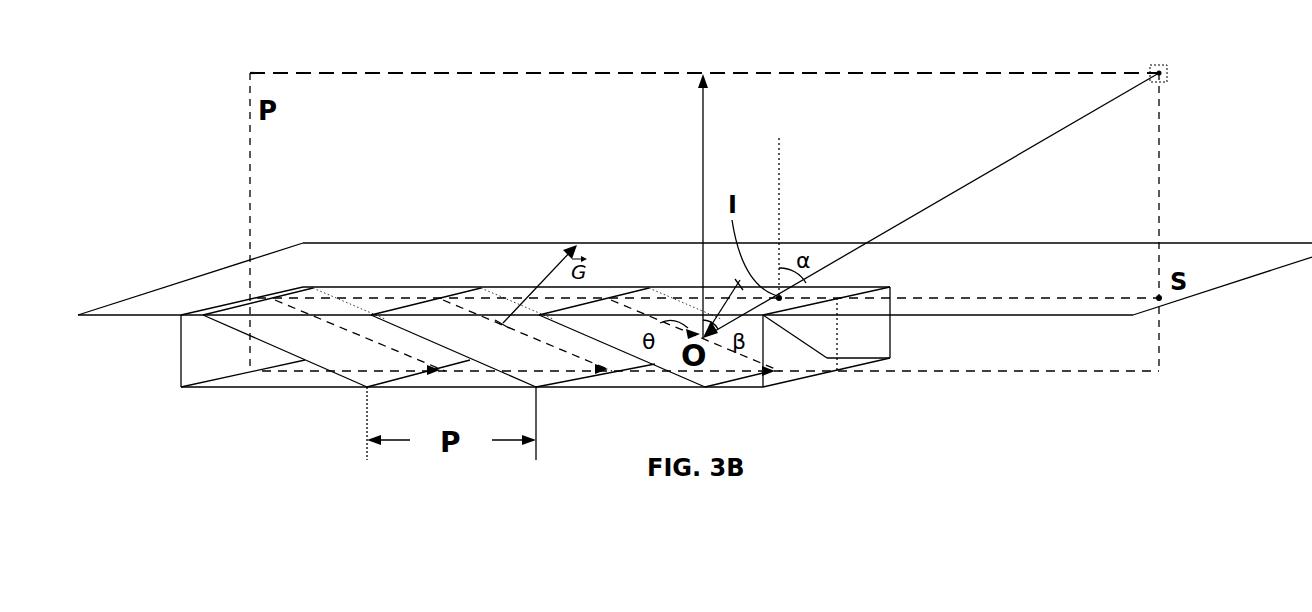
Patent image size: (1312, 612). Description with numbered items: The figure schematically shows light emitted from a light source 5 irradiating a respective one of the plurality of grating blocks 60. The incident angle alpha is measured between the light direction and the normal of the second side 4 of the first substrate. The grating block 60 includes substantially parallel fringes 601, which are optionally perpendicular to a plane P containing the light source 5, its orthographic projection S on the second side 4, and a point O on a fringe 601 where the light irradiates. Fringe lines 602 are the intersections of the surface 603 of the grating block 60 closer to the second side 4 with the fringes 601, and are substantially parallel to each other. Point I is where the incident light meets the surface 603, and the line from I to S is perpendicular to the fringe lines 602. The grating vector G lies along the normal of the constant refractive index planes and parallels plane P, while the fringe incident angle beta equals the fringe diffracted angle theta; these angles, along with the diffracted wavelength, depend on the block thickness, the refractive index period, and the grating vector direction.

The second side of the first substrate 4 is at (695, 279).
The light source 5 is at (1167, 73).
The grating block 60 is at (180, 353).
The substantially parallel fringes 601 is at (337, 352).
The fringe lines 602 is at (458, 290).
The surface of the grating block 603 is at (358, 290).